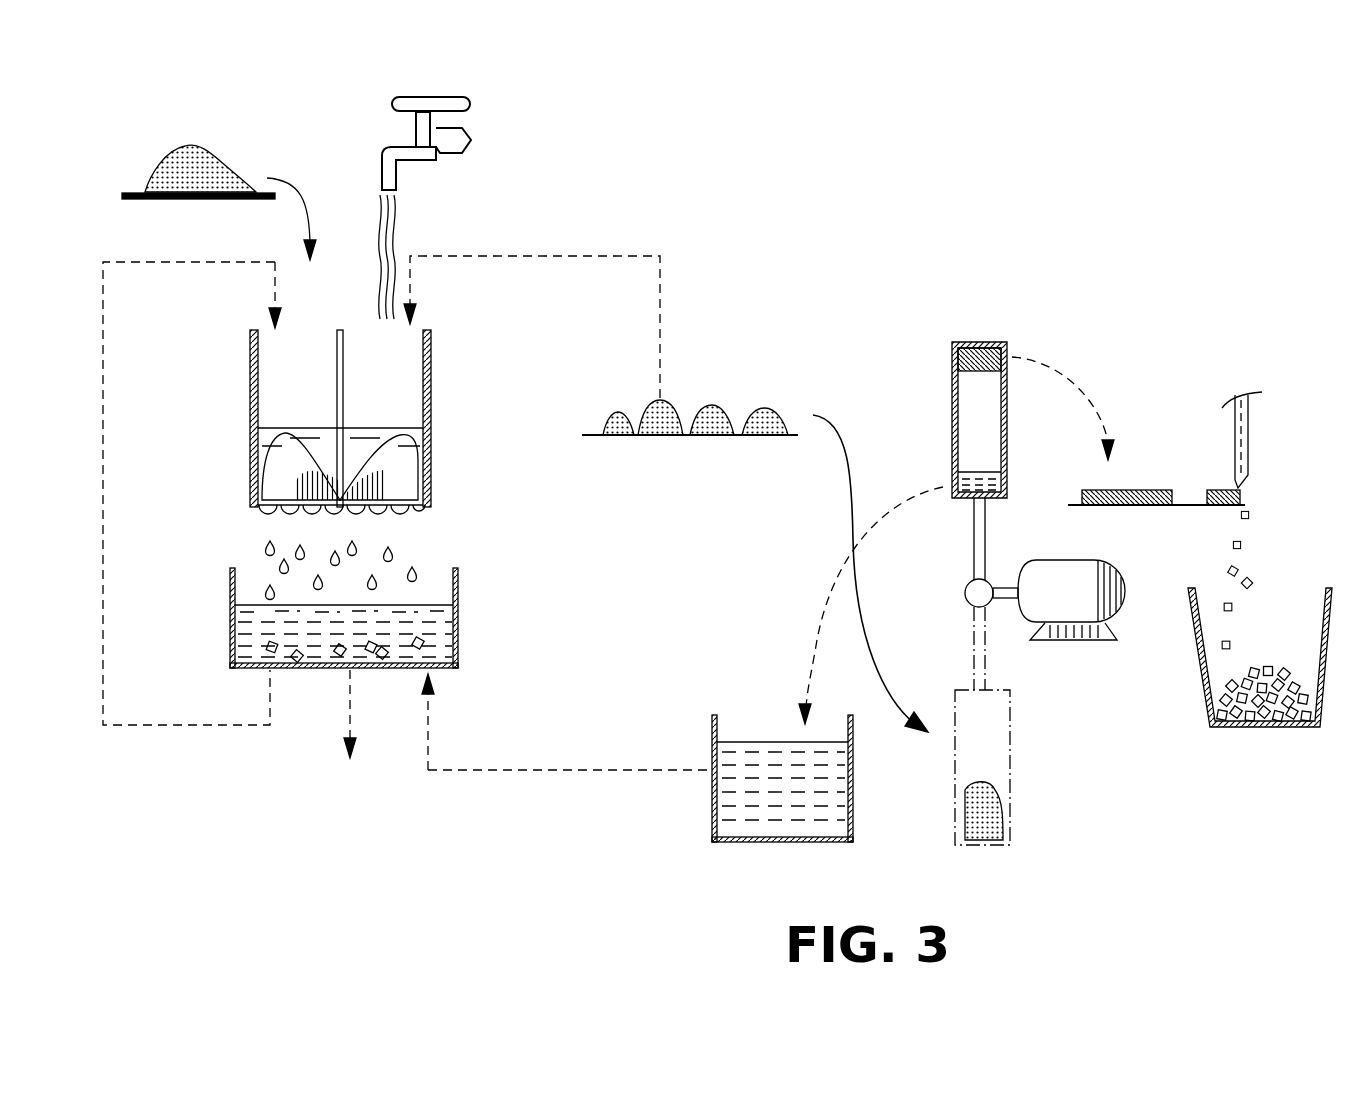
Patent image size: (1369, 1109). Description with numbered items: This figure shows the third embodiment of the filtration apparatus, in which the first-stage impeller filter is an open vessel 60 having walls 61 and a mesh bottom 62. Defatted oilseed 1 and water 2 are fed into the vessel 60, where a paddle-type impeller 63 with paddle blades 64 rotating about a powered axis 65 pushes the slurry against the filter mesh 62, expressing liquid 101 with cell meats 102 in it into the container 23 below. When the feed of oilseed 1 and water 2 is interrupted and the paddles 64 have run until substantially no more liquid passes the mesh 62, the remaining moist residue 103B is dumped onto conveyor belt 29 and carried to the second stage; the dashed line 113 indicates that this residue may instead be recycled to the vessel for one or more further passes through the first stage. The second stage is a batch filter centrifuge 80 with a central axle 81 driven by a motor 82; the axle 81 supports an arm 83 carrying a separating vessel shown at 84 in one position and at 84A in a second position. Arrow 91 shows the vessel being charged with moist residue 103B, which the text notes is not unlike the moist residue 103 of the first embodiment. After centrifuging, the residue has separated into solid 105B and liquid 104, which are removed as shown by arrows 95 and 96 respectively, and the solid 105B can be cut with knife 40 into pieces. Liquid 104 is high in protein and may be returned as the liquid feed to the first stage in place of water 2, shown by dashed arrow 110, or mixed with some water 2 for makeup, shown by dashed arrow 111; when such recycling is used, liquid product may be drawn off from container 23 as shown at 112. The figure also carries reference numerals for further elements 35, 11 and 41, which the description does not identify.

The defatted oilseed 1 is at (215, 161).
The water 2 is at (390, 229).
The open vessel 60 is at (332, 412).
The paddle-type impeller 63 is at (278, 356).
The powered axis 65 is at (343, 366).
The paddle blades 64 is at (408, 452).
The walls 61 is at (262, 466).
The mesh bottom 62 is at (275, 512).
The container 23 is at (338, 600).
The liquid 101 is at (252, 641).
The cell meats 102 is at (428, 644).
The dashed arrow 111 is at (103, 692).
The draw-off 112 is at (350, 703).
The dashed arrow 110 is at (483, 772).
The dashed line 113 is at (583, 256).
The moist residue 103B is at (708, 405).
The conveyor belt 29 is at (690, 414).
The batch filter centrifuge 80 is at (981, 529).
The separating vessel 84 is at (952, 425).
The solid 105B is at (958, 345).
The liquid 104 is at (1005, 488).
The arm 83 is at (974, 538).
The central axle 81 is at (1005, 586).
The motor 82 is at (1075, 602).
The separating vessel 84A is at (1043, 772).
The moist residue 103 is at (980, 810).
The arrow 96 is at (1068, 381).
The arrow 91 is at (848, 494).
The arrow 95 is at (815, 626).
The liquid tank 35 is at (735, 843).
The knife 40 is at (1238, 492).
The collecting bin 11 is at (1273, 664).
The cut pieces 41 is at (1257, 730).